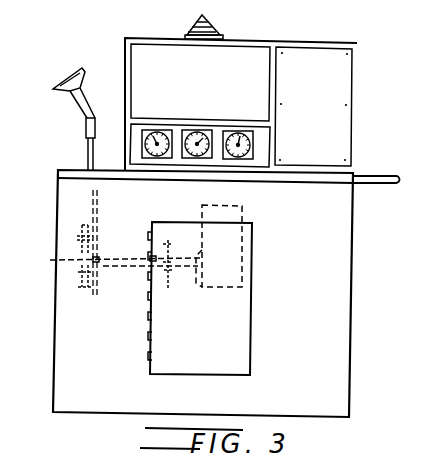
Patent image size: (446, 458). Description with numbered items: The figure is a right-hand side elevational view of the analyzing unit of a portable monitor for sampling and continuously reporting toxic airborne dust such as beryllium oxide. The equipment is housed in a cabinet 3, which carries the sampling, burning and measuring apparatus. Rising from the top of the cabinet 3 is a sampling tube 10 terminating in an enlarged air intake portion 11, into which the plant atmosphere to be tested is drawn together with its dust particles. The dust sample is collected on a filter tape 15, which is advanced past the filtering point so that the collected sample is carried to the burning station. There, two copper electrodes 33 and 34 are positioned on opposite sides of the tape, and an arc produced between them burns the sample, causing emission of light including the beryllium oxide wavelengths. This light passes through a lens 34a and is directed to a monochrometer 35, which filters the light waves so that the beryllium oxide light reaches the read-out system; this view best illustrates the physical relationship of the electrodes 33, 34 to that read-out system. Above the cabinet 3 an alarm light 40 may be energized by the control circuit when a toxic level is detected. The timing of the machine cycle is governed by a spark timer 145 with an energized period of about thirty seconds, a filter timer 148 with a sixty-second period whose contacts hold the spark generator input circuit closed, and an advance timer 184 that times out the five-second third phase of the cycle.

The cabinet 3 is at (351, 347).
The sampling tube 10 is at (87, 151).
The enlarged air intake portion 11 is at (53, 89).
The filter tape 15 is at (116, 262).
The electrode 33 is at (79, 238).
The electrode 34 is at (81, 285).
The lens 34a is at (170, 275).
The monochrometer 35 is at (219, 258).
The alarm light 40 is at (215, 23).
The spark timer 145 is at (196, 138).
The filter timer 148 is at (158, 136).
The advance timer 184 is at (238, 136).